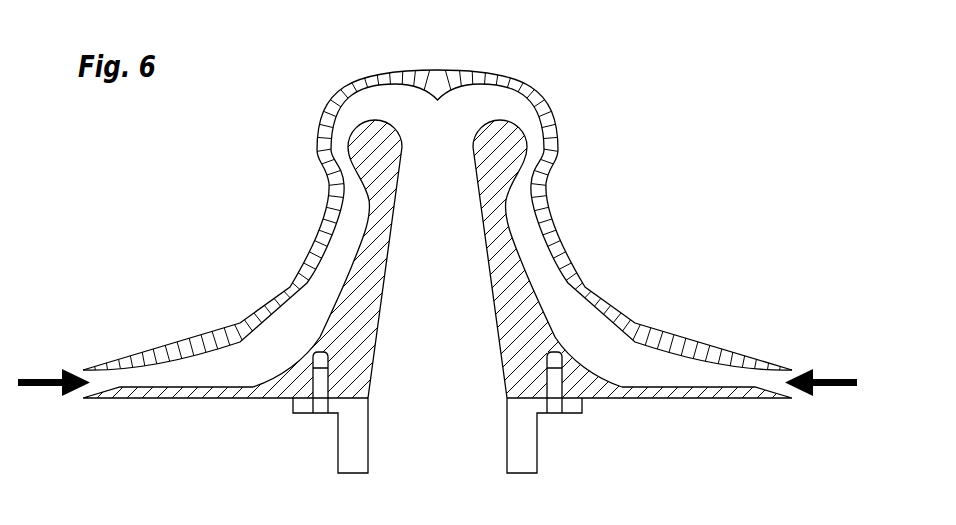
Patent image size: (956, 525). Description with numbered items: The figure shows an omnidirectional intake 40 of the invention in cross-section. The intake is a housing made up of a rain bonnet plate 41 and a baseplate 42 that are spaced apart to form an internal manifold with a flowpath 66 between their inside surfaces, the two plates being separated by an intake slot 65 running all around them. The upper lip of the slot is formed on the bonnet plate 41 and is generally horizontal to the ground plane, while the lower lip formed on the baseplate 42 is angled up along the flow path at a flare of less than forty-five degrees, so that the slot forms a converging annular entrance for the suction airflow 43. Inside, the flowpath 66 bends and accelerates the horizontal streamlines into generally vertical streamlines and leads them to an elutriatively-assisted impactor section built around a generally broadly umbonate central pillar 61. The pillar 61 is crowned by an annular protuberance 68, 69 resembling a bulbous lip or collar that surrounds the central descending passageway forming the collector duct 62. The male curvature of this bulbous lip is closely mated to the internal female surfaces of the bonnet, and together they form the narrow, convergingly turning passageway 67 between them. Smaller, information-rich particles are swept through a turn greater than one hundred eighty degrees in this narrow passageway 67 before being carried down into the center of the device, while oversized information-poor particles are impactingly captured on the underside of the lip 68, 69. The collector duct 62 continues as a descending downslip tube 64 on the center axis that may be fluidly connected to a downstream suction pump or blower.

The omnidirectional intake 40 is at (140, 159).
The bonnet plate 41 is at (167, 346).
The baseplate 42 is at (157, 399).
The suction airflow 43 is at (803, 370).
The central pillar 61 is at (490, 108).
The collector duct 62 is at (455, 298).
The downslip tube 64 is at (537, 448).
The intake slot 65 is at (238, 374).
The flowpath 66 is at (347, 283).
The narrow turning passageway 67 is at (378, 118).
The annular protuberance 68 is at (350, 166).
The annular protuberance 69 is at (348, 148).